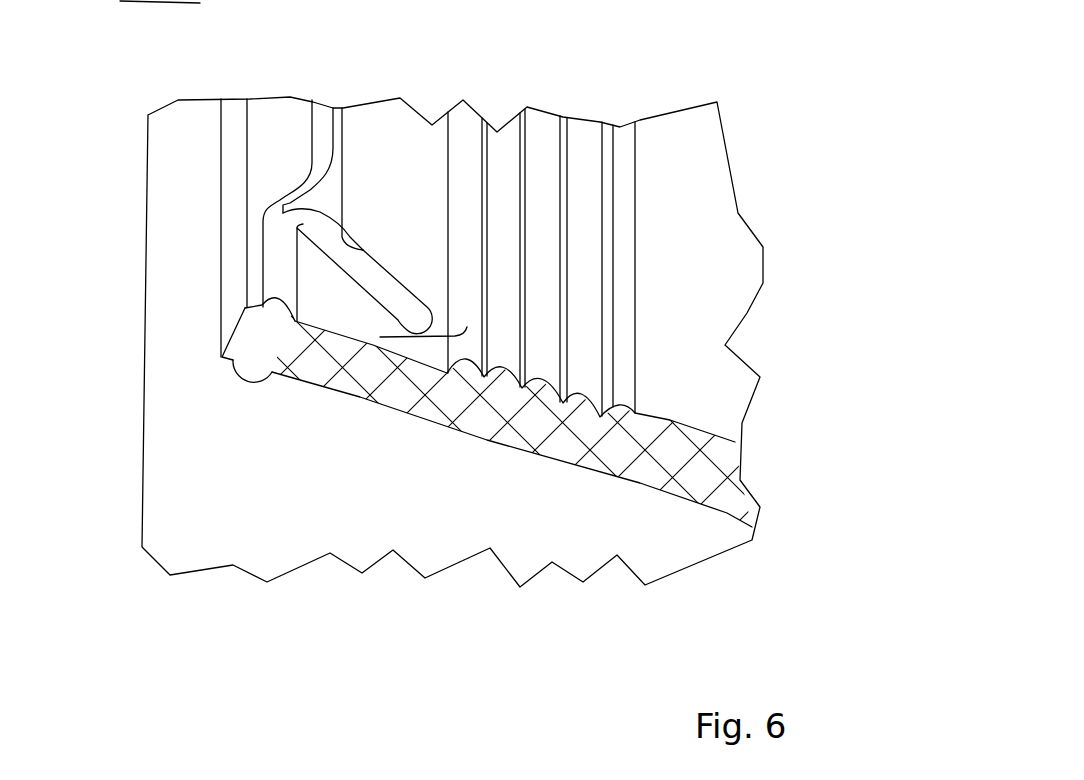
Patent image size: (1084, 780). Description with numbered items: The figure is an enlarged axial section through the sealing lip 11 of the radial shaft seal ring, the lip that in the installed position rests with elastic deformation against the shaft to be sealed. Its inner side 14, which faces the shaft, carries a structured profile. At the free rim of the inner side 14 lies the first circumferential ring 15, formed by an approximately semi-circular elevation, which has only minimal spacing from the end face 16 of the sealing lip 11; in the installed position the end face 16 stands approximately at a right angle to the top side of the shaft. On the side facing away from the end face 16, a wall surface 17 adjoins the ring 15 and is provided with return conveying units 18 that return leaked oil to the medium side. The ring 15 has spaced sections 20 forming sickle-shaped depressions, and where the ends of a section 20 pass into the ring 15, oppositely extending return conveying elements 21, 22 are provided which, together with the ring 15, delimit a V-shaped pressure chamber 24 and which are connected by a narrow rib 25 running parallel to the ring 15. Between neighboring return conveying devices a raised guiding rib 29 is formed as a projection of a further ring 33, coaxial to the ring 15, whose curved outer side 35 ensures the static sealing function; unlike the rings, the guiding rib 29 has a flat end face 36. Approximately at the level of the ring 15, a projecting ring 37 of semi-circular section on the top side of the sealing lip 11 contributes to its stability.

The sealing lip 11 is at (330, 398).
The inner side 14 is at (668, 418).
The first circumferential ring 15 is at (233, 360).
The end face 16 is at (236, 324).
The wall surface 17 is at (387, 293).
The return conveying units 18 is at (363, 245).
The sections 20 is at (325, 132).
The return conveying element 21 is at (135, 9).
The return conveying element 22 is at (387, 293).
The pressure chamber 24 is at (322, 268).
The rib 25 is at (348, 137).
The guiding rib 29 is at (447, 357).
The ring 33 is at (435, 633).
The curved outer side 35 is at (642, 241).
The flat end face 36 is at (427, 345).
The projecting ring 37 is at (250, 383).